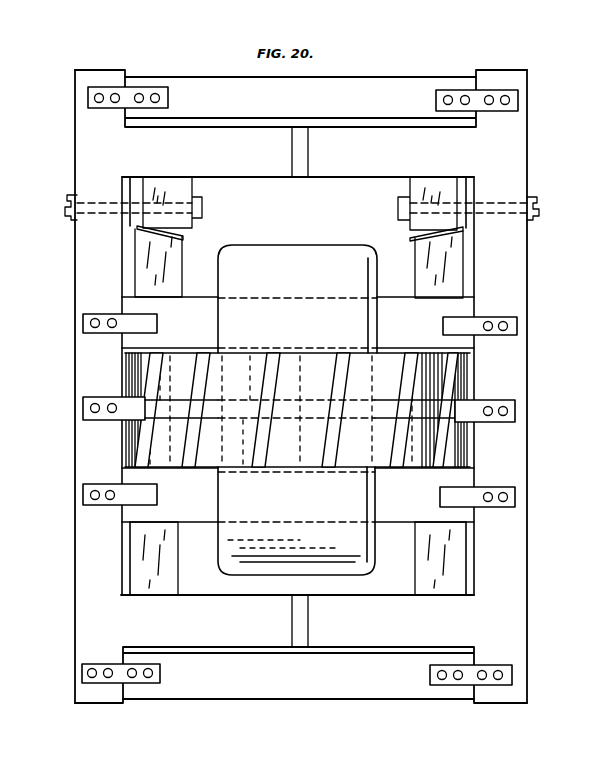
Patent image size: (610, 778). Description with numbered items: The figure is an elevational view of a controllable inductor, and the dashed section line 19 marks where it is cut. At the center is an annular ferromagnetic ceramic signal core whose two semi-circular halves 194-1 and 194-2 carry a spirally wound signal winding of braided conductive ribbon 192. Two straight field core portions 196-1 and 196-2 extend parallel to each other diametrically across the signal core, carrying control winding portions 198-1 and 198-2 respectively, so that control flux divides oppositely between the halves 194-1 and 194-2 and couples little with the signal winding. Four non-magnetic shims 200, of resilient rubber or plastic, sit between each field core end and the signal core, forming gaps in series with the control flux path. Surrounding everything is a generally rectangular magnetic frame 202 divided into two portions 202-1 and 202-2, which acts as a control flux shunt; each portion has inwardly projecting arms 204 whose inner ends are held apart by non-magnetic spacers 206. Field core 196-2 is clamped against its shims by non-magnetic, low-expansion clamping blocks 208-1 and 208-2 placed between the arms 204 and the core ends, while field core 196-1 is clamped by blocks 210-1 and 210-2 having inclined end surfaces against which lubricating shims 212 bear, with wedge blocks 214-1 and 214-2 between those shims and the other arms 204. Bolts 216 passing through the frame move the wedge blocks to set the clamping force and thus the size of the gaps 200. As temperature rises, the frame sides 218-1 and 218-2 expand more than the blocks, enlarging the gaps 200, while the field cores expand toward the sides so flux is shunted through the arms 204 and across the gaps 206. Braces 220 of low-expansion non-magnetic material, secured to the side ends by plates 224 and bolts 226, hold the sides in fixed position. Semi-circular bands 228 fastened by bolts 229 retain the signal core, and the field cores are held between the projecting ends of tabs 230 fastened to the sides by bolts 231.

The section line 19- 19 is at (67, 241).
The braided conductive ribbon 192 is at (343, 354).
The semi-circular half of signal core 194-1 is at (238, 362).
The semi-circular half of signal core 194-2 is at (238, 457).
The field core portion 196-1 is at (153, 305).
The field core portion 196-2 is at (137, 511).
The control winding portion 198-1 is at (250, 254).
The control winding portion 198-2 is at (257, 574).
The non-magnetic shim 200 is at (145, 352).
The magnetic frame 202 is at (578, 158).
The frame portion 202-1 is at (75, 137).
The frame portion 202-2 is at (528, 127).
The inwardly projecting arm 204 is at (271, 172).
The non-magnetic spacer 206 is at (298, 177).
The clamping block 208-1 is at (142, 572).
The clamping block 208-2 is at (457, 577).
The clamping block 210-1 is at (150, 271).
The clamping block 210-2 is at (458, 273).
The lubricating shim 212 is at (186, 232).
The wedge block 214-1 is at (202, 190).
The wedge block 214-2 is at (398, 190).
The bolt 216 is at (66, 198).
The frame side 218-1 is at (80, 547).
The frame side 218-2 is at (80, 418).
The brace 220 is at (221, 77).
The plate 224 is at (116, 86).
The bolt 226 is at (141, 94).
The semi-circular band 228 is at (113, 398).
The bolt 229 is at (517, 410).
The arm or tab 230 is at (483, 317).
The bolt 231 is at (517, 327).